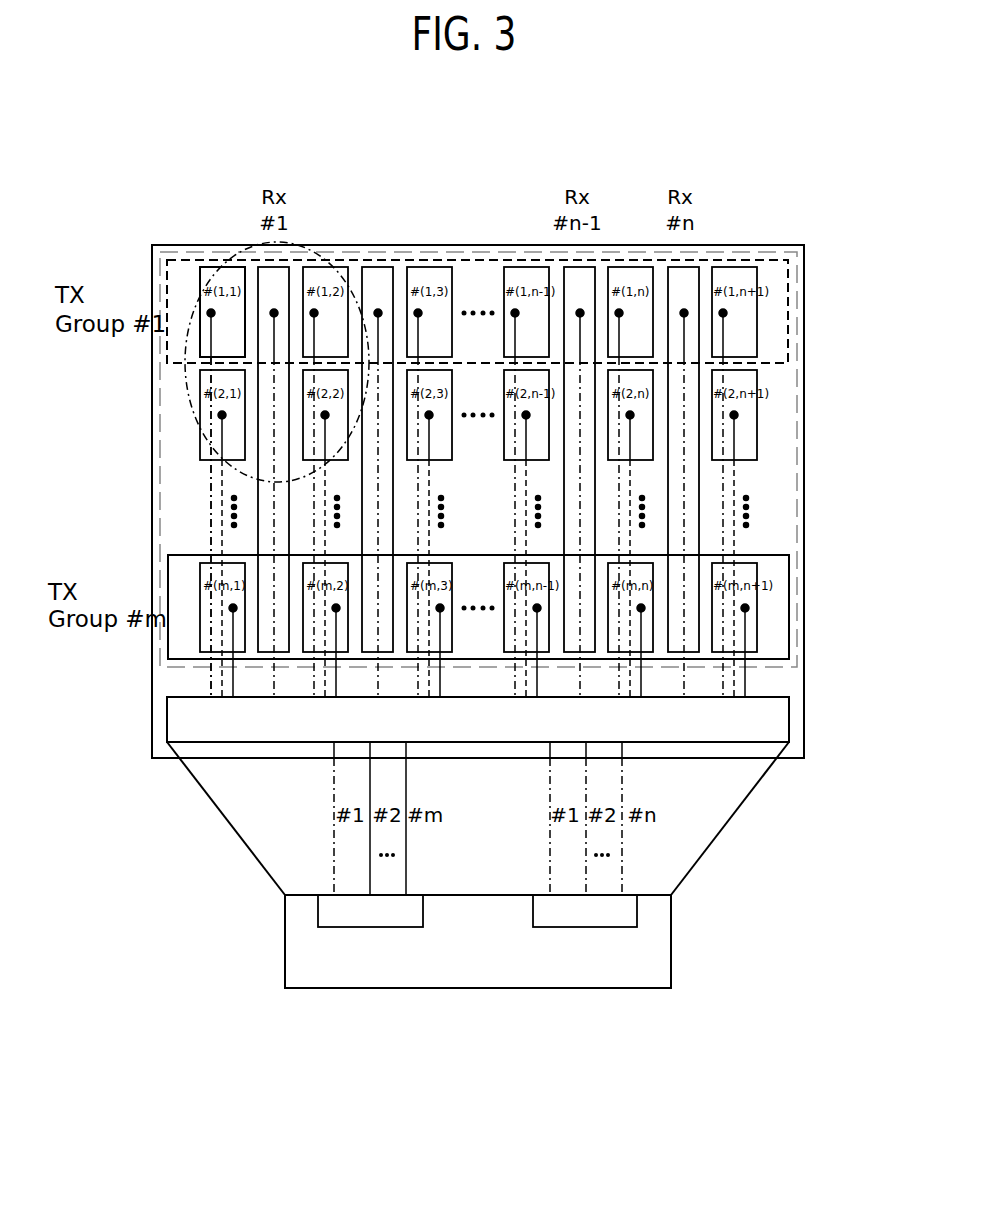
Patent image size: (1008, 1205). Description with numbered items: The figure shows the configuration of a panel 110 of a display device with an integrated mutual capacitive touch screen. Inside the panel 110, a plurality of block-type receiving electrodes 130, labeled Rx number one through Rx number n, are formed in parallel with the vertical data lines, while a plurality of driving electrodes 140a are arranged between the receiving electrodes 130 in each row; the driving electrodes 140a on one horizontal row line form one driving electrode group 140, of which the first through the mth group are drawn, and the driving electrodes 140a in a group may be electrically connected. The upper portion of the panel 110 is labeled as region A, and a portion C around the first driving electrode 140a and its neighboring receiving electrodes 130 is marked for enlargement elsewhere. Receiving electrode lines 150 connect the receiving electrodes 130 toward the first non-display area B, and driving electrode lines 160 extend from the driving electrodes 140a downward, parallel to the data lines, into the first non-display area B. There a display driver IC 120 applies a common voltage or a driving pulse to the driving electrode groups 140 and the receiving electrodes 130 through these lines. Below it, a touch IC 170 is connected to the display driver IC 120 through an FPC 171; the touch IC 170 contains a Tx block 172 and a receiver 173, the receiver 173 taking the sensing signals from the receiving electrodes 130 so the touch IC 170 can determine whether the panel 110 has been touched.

The panel 110 is at (797, 630).
The display driver IC 120 is at (789, 720).
The receiving electrodes 130 is at (273, 265).
The driving electrode group 140 is at (200, 262).
The driving electrode 140a is at (198, 334).
The receiving electrode lines 150 is at (273, 337).
The driving electrode lines 160 is at (212, 500).
The touch IC 170 is at (671, 945).
The FPC 171 is at (733, 818).
The Tx driver 172 is at (370, 927).
The receiver 173 is at (585, 927).
The display region A is at (797, 462).
The first non-display area B is at (165, 680).
The portion C is at (197, 301).